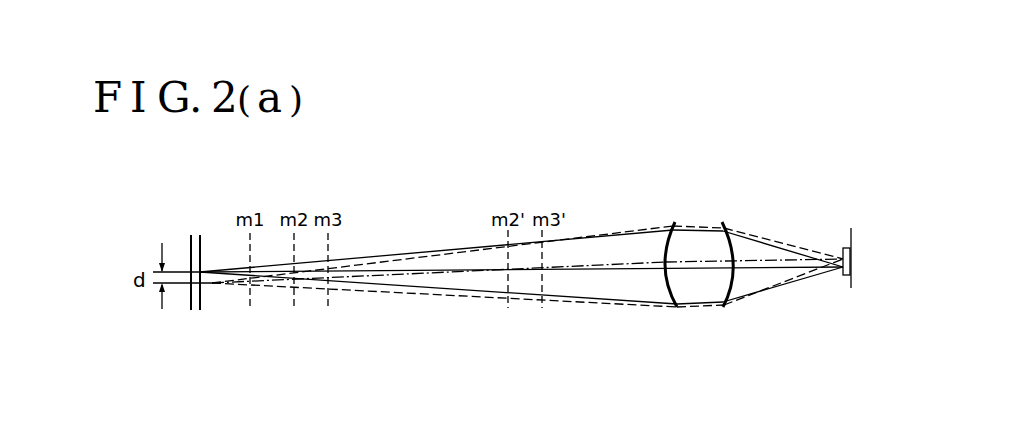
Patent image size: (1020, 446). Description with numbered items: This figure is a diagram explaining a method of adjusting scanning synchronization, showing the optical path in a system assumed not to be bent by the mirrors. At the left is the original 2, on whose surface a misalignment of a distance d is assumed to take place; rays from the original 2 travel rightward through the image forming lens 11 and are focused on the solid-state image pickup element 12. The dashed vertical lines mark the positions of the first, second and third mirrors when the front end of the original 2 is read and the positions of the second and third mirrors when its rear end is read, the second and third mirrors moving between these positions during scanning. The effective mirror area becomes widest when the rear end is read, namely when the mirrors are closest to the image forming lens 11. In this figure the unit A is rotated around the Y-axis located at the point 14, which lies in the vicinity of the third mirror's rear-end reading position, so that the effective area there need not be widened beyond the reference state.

The original 2 is at (191, 256).
The image forming lens 11 is at (675, 224).
The solid-state image pickup element 12 is at (853, 261).
The point 14 is at (542, 270).